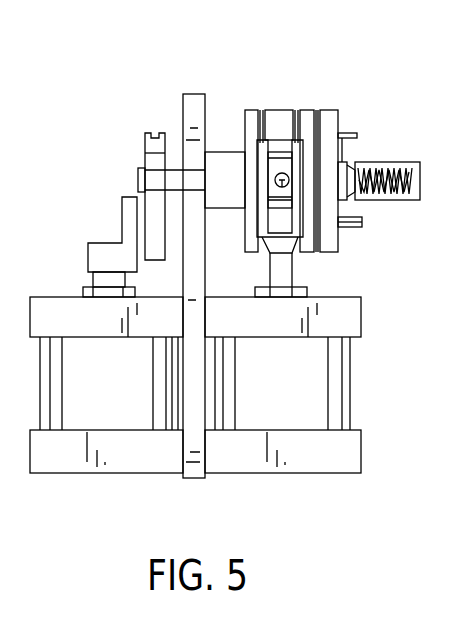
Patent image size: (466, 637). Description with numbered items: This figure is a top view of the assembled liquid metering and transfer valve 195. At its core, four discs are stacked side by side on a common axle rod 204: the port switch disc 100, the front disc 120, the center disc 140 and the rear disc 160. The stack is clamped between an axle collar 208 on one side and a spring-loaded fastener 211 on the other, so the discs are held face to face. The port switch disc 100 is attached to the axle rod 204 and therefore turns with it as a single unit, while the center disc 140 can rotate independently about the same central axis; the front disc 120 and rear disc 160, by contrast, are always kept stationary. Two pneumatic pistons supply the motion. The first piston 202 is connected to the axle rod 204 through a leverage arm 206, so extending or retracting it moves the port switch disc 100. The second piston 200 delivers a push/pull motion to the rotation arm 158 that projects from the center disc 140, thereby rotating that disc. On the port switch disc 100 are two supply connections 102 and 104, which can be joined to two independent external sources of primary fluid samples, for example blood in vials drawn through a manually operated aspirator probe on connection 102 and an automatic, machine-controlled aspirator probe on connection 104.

The liquid metering and transfer valve 195 is at (196, 62).
The rear disc 160 is at (255, 110).
The leverage arm 206 is at (145, 143).
The axle rod 204 is at (137, 182).
The axle collar 208 is at (228, 188).
The center disc 140 is at (280, 110).
The rotation arm 158 is at (282, 197).
The front disc 120 is at (313, 110).
The port switch disc 100 is at (327, 113).
The spring-loaded fastener 211 is at (385, 162).
The supply connection 102 is at (362, 218).
The supply connection 104 is at (362, 226).
The first piston 202 is at (137, 455).
The second piston 200 is at (305, 457).